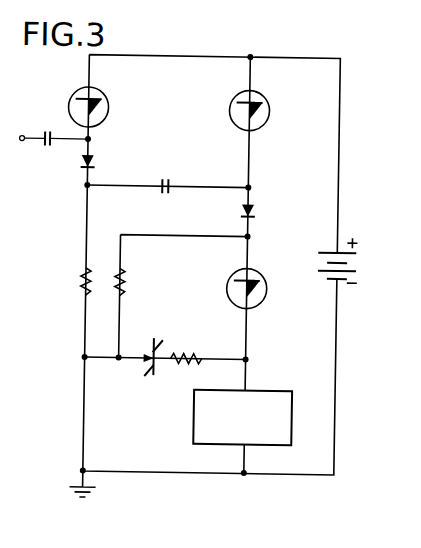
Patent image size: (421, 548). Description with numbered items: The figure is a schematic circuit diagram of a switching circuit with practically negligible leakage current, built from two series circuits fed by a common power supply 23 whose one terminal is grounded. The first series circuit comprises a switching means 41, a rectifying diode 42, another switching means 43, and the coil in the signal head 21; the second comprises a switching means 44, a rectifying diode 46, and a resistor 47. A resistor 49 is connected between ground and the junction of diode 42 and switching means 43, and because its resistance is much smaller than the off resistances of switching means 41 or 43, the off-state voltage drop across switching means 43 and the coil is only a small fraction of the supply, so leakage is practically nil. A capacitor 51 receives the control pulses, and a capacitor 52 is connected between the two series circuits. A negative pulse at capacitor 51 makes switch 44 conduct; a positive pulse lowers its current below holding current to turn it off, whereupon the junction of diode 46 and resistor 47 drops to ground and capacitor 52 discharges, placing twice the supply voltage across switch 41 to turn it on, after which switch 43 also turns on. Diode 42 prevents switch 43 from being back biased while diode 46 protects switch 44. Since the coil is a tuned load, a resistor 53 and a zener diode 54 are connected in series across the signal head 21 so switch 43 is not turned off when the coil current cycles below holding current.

The signal head 21 is at (269, 390).
The power supply 23 is at (336, 251).
The switching means 41 is at (260, 125).
The rectifying diode 42 is at (255, 213).
The switching means 43 is at (267, 288).
The switching means 44 is at (72, 95).
The rectifying diode 46 is at (83, 169).
The resistor 47 is at (82, 285).
The resistor 49 is at (124, 285).
The capacitor 51 is at (43, 134).
The capacitor 52 is at (167, 185).
The resistor 53 is at (186, 358).
The zener diode 54 is at (153, 351).